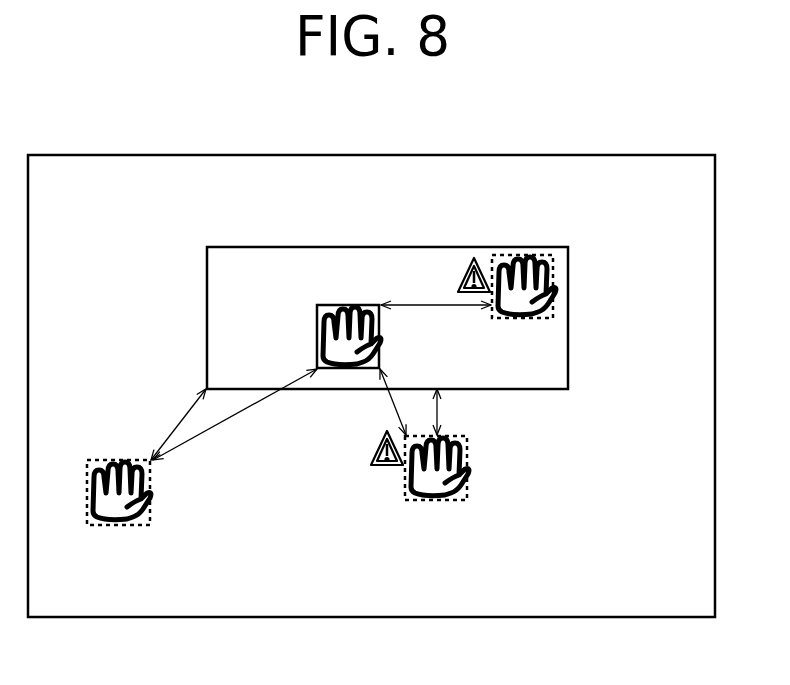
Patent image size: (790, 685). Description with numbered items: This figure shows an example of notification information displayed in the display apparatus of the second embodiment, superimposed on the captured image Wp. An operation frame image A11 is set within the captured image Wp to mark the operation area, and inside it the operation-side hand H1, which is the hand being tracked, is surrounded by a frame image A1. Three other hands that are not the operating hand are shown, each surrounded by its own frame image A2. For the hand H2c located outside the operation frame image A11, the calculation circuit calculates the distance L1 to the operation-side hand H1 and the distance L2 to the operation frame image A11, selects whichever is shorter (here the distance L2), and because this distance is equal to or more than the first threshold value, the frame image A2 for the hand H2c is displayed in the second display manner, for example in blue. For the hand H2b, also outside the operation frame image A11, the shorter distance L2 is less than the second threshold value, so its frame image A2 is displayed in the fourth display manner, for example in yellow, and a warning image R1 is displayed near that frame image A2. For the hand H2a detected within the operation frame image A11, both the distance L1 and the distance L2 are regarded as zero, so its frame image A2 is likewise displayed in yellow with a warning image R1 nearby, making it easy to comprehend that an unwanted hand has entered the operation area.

The captured image Wp is at (98, 154).
The operation frame image A11 is at (258, 246).
The frame image A1 is at (330, 303).
The operation-side hand H1 is at (308, 327).
The frame image A2 is at (505, 254).
The hand H2a is at (487, 331).
The hand H2b is at (433, 513).
The hand H2c is at (112, 543).
The warning image R1 is at (454, 270).
The distance L1 is at (322, 382).
The distance L2 is at (314, 424).